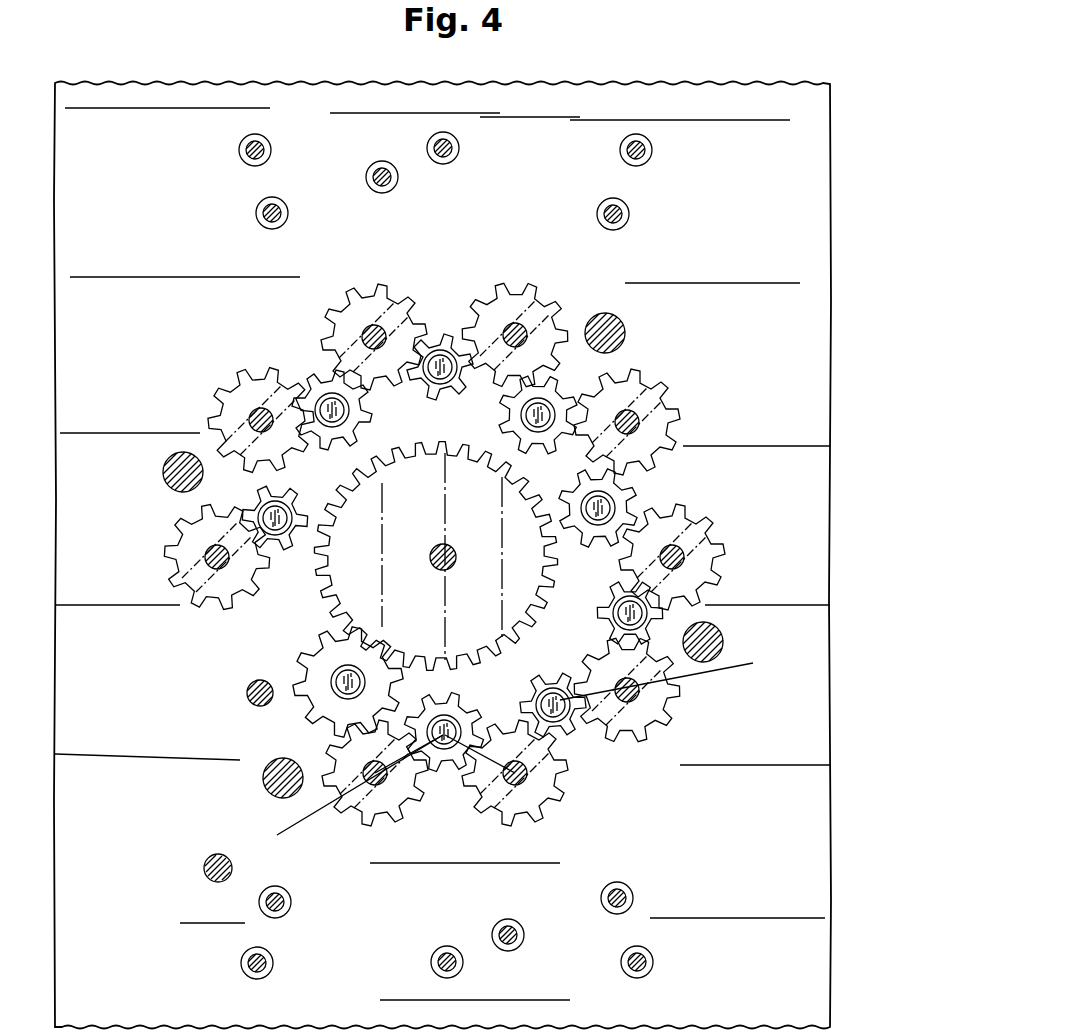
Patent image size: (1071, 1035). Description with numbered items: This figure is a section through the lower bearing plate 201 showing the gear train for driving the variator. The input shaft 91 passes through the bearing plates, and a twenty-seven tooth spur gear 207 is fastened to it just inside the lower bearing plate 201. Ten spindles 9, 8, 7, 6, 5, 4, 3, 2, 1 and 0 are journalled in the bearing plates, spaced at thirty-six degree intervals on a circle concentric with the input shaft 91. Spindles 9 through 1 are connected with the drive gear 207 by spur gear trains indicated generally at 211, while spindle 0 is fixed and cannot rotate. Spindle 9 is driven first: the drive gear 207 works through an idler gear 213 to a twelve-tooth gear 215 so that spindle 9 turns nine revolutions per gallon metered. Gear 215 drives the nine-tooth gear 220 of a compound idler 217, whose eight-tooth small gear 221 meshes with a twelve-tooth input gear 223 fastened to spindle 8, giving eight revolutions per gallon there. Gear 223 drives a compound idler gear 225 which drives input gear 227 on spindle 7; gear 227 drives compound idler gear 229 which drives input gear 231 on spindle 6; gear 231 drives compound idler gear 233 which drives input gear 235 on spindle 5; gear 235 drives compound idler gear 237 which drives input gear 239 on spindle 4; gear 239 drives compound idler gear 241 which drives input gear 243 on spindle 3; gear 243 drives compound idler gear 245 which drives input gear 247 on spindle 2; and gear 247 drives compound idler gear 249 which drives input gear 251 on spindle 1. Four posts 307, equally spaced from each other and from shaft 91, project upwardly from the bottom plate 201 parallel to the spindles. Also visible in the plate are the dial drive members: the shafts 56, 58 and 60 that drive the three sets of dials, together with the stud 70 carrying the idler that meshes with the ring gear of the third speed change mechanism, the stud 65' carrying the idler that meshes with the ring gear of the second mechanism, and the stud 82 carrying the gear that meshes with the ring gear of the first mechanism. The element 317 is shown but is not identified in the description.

The lower bearing plate 201 is at (697, 97).
The spur gear trains 211 is at (705, 352).
The spur gear 207 is at (496, 508).
The input shaft 91 is at (449, 562).
The input gear 243 is at (337, 333).
The spindle 3 is at (374, 325).
The input gear 239 is at (525, 296).
The spindle 4 is at (527, 327).
The compound idler gear 241 is at (445, 333).
The input gear 247 is at (258, 372).
The spindle 2 is at (250, 417).
The compound idler gear 245 is at (364, 416).
The compound idler gear 237 is at (500, 418).
The input gear 235 is at (684, 429).
The spindle 5 is at (640, 415).
The compound idler gear 249 is at (309, 484).
The input gear 251 is at (188, 511).
The spindle 1 is at (208, 556).
The compound idler gear 233 is at (649, 481).
The input gear 231 is at (700, 526).
The spindle 6 is at (684, 555).
The compound idler gear 229 is at (604, 607).
The input gear 227 is at (666, 728).
The spindle 7 is at (640, 690).
The compound idler gear 225 is at (577, 740).
The idler gear 213 is at (322, 644).
The gear of compound idler 220 is at (450, 690).
The small gear of compound idler 221 is at (458, 697).
The compound idler 217 is at (442, 772).
The gear 215 is at (379, 789).
The spindle 9 is at (375, 773).
The input gear 223 is at (515, 826).
The spindle 8 is at (515, 773).
The posts 307 is at (617, 325).
The spindle 0 is at (247, 690).
The pin 317 is at (205, 865).
The shaft 60 is at (241, 150).
The shaft 58 is at (459, 147).
The shaft 56 is at (653, 150).
The stud 65' is at (445, 556).
The stud 82 is at (256, 213).
The stud 70 is at (629, 214).